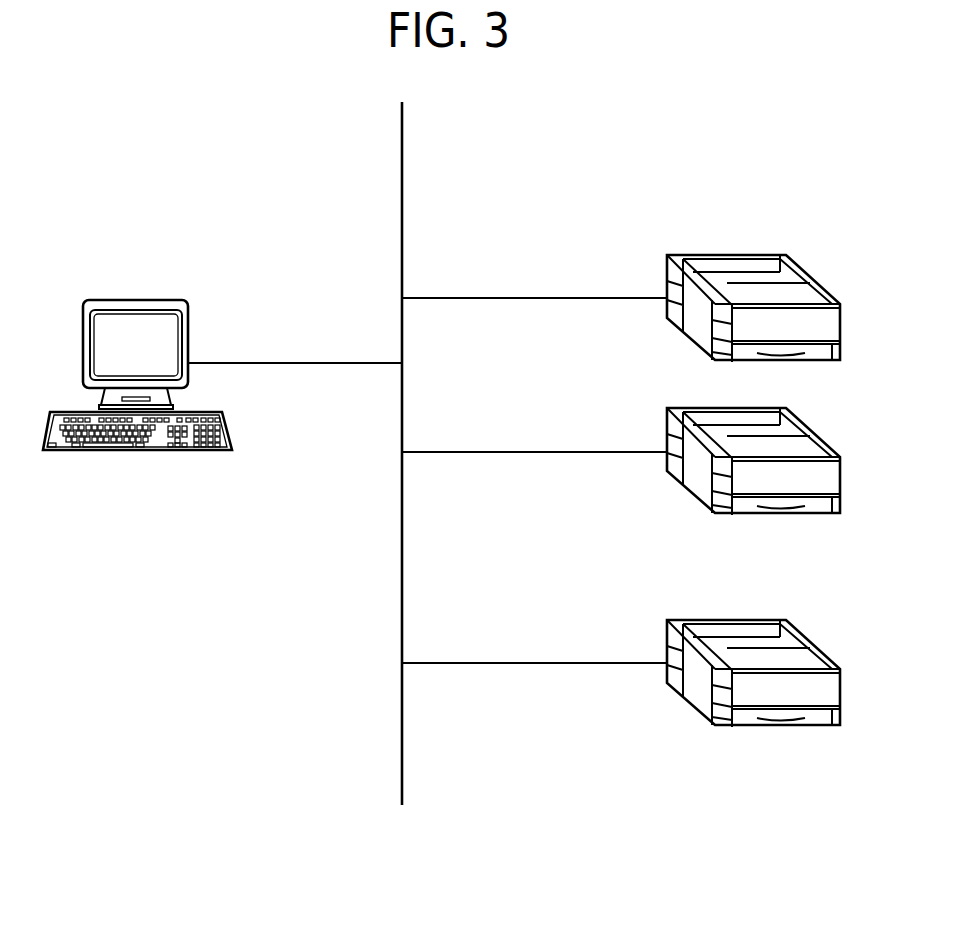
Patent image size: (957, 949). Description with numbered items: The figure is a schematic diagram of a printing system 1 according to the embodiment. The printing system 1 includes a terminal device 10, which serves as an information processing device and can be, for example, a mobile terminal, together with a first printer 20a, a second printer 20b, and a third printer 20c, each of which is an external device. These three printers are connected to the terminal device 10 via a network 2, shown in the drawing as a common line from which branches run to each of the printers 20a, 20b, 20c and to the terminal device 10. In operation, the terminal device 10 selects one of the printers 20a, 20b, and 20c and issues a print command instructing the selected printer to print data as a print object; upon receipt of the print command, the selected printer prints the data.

The printing system 1 is at (811, 205).
The network 2 is at (403, 196).
The terminal device 10 is at (165, 299).
The first printer 20a is at (812, 275).
The second printer 20b is at (759, 453).
The third printer 20c is at (759, 665).